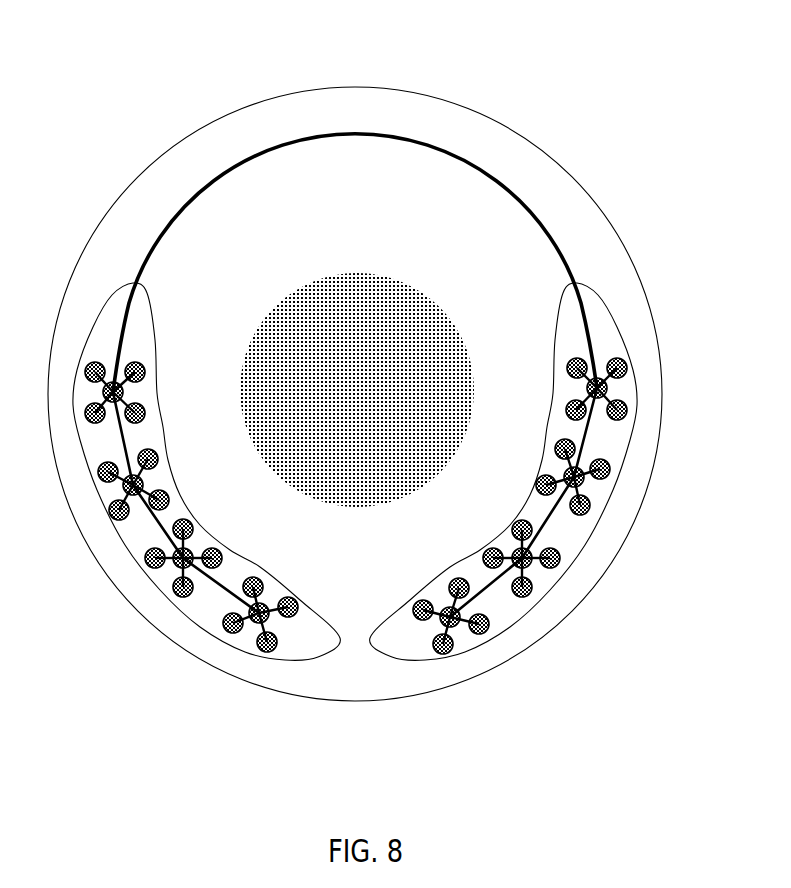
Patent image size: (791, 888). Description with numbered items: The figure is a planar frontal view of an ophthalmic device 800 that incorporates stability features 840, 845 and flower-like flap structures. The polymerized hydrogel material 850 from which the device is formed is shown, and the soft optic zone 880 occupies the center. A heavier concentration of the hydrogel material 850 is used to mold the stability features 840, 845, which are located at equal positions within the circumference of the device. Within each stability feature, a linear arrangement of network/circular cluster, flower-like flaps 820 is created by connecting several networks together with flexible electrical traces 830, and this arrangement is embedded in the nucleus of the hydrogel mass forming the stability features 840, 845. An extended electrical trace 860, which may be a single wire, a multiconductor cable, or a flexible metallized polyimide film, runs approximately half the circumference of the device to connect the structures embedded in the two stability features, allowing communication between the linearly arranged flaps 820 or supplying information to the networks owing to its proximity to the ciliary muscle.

The wearable device cross-section 800 is at (171, 33).
The flower-like flaps 820 is at (190, 507).
The flexible electrical traces 830 is at (527, 525).
The stability feature 840 is at (175, 424).
The stability feature 845 is at (565, 425).
The polymerized hydrogel material 850 is at (355, 366).
The extended electrical trace 860 is at (377, 258).
The soft optic zone 880 is at (342, 525).